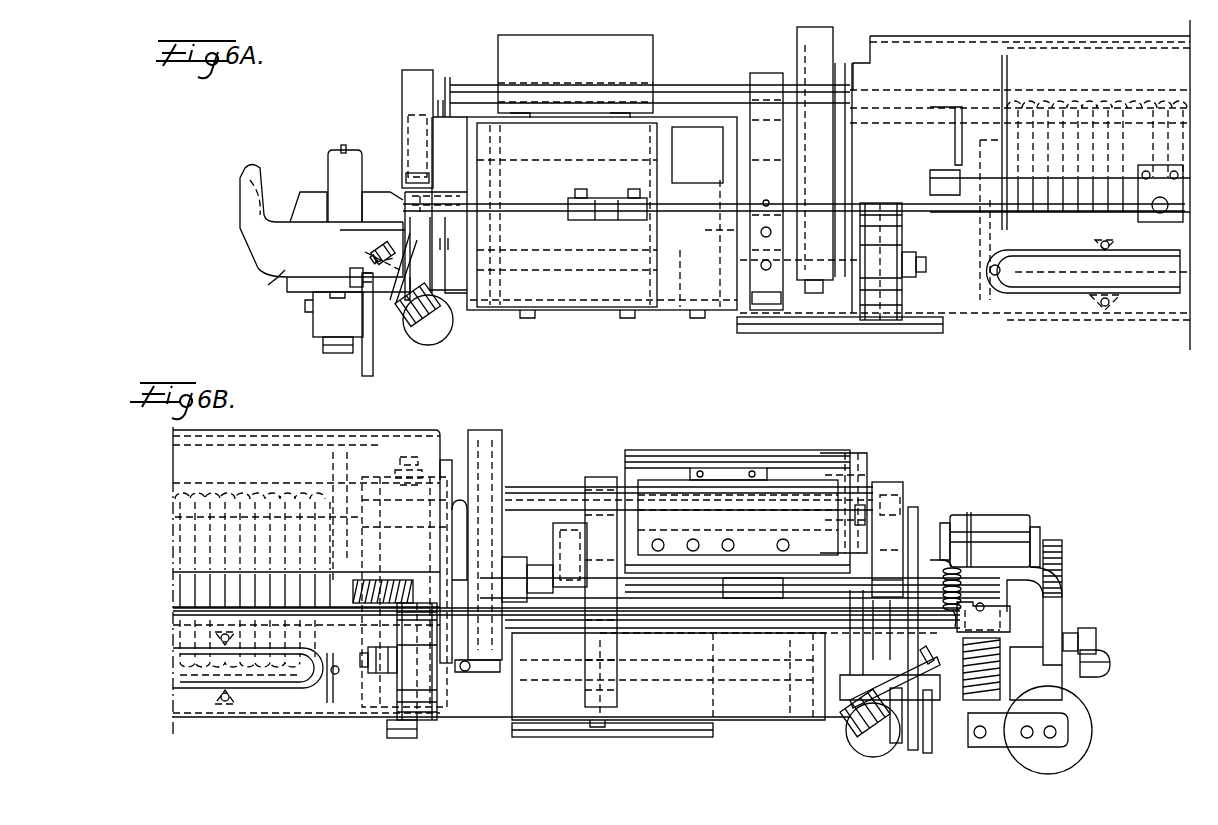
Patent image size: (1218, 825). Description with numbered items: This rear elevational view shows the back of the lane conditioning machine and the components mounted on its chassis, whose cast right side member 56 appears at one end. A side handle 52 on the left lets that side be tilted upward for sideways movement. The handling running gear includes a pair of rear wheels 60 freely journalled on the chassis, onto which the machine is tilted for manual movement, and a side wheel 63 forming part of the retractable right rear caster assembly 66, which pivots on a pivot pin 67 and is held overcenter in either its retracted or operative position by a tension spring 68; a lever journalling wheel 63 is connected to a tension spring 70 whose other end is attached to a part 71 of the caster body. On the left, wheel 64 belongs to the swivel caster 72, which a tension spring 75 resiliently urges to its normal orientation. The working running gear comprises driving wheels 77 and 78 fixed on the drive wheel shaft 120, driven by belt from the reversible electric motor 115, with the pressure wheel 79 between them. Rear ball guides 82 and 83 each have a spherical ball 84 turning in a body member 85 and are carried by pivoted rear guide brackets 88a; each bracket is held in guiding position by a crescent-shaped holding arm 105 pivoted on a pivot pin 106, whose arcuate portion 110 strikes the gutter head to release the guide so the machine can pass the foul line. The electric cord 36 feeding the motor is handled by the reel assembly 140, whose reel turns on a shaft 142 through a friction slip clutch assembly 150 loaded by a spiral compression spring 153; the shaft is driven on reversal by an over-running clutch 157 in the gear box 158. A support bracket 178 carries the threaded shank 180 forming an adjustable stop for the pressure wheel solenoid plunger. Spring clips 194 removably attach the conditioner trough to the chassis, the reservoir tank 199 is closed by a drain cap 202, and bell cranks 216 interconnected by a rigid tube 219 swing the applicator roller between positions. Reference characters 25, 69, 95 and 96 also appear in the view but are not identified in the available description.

In FIG. 6A, the recess 25 is at (272, 278).
In FIG. 6A, the electric cord 36 is at (1125, 212).
In FIG. 6A, the side handle 52 is at (244, 180).
In FIG. 6B, the side handle 52 is at (495, 450).
In FIG. 6B, the right side member 56 is at (1102, 660).
In FIG. 6A, the rear wheels 60 is at (892, 318).
In FIG. 6B, the rear wheels 60 is at (424, 720).
In FIG. 6B, the side wheel 63 is at (1080, 718).
In FIG. 6A, the side wheel 64 is at (342, 352).
In FIG. 6B, the retractable right rear caster assembly 66 is at (1047, 683).
In FIG. 6B, the pivot pin 67 is at (1088, 630).
In FIG. 6B, the tension spring 68 is at (960, 583).
In FIG. 6B, the plate 69 is at (1000, 745).
In FIG. 6B, the tension spring 70 is at (975, 702).
In FIG. 6B, the part of the caster body 71 is at (983, 604).
In FIG. 6A, the swivel caster 72 is at (330, 315).
In FIG. 6A, the tension spring 75 is at (348, 148).
In FIG. 6A, the driving wheel 77 is at (810, 328).
In FIG. 6B, the driving wheel 78 is at (670, 735).
In FIG. 6B, the pressure wheel 79 is at (400, 738).
In FIG. 6A, the ball guide 82 is at (428, 325).
In FIG. 6B, the ball guide 83 is at (900, 745).
In FIG. 6A, the spherical ball 84 is at (423, 303).
In FIG. 6A, the body member 85 is at (410, 310).
In FIG. 6A, the rear guide bracket 88a is at (374, 250).
In FIG. 6B, the rear guide bracket 88a is at (858, 720).
In FIG. 6A, the shaft 95 is at (556, 212).
In FIG. 6B, the shaft 95 is at (760, 628).
In FIG. 6A, the plate 96 is at (748, 205).
In FIG. 6A, the holding arm 105 is at (408, 255).
In FIG. 6B, the holding arm 105 is at (888, 636).
In FIG. 6A, the pivot pin 106 is at (348, 278).
In FIG. 6A, the arcuate portion 110 is at (370, 371).
In FIG. 6B, the arcuate portion 110 is at (927, 755).
In FIG. 6B, the reversible electric motor 115 is at (670, 462).
In FIG. 6A, the drive wheel shaft 120 is at (545, 278).
In FIG. 6B, the drive wheel shaft 120 is at (733, 698).
In FIG. 6A, the reel assembly 140 is at (1078, 232).
In FIG. 6B, the reel assembly 140 is at (256, 620).
In FIG. 6B, the shaft 142 is at (720, 585).
In FIG. 6B, the friction slip clutch assembly 150 is at (363, 594).
In FIG. 6B, the spiral compression spring 153 is at (393, 600).
In FIG. 6B, the over-running clutch 157 is at (912, 495).
In FIG. 6B, the gear box 158 is at (885, 482).
In FIG. 6B, the support bracket 178 is at (447, 460).
In FIG. 6B, the threaded shank 180 is at (405, 455).
In FIG. 6A, the spring clips 194 is at (717, 156).
In FIG. 6B, the spring clips 194 is at (556, 558).
In FIG. 6B, the tank 199 is at (1005, 520).
In FIG. 6B, the drain cap 202 is at (1058, 548).
In FIG. 6A, the bell cranks 216 is at (440, 72).
In FIG. 6B, the bell cranks 216 is at (857, 455).
In FIG. 6A, the rigid tube 219 is at (704, 88).
In FIG. 6B, the rigid tube 219 is at (536, 490).